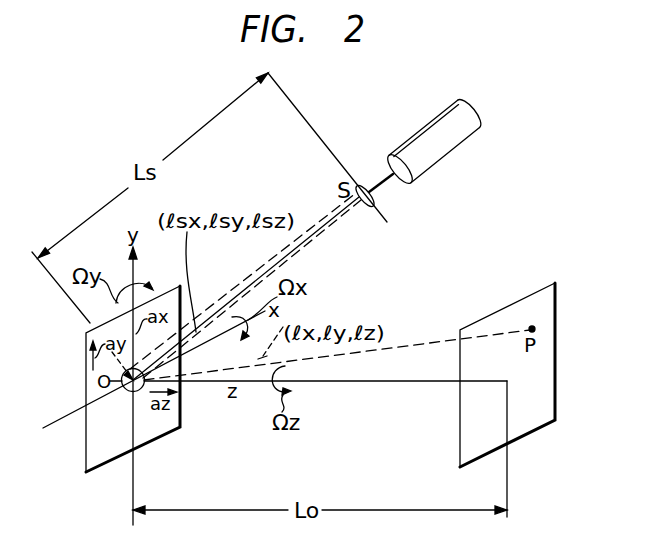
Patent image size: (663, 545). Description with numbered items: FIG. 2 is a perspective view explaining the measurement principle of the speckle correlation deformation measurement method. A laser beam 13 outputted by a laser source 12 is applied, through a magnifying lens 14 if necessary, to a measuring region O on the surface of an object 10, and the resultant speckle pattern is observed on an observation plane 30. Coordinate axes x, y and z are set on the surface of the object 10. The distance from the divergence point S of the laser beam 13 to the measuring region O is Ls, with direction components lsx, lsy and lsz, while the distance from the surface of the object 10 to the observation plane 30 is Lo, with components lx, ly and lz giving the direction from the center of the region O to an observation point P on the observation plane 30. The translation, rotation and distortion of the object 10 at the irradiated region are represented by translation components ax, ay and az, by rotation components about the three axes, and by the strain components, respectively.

The object 10 is at (98, 441).
The laser source 12 is at (430, 123).
The laser beam 13 is at (384, 178).
The magnifying lens 14 is at (376, 199).
The observation plane 30 is at (515, 309).